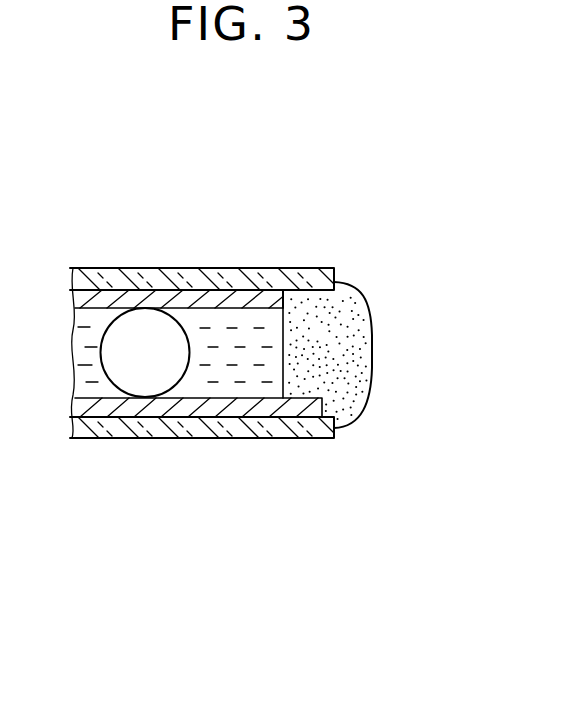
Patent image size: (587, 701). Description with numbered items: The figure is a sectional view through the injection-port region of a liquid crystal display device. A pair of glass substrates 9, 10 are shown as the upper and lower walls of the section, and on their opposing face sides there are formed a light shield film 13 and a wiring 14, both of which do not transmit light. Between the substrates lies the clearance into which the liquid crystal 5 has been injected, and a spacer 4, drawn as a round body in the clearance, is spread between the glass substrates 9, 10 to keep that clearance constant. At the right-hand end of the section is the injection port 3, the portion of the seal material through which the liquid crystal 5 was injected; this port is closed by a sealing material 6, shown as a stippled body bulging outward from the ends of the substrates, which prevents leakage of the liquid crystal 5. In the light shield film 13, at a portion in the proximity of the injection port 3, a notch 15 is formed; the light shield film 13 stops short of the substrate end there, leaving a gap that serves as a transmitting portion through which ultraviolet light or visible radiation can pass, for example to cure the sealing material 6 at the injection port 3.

The injection port 3 is at (275, 360).
The spacer 4 is at (145, 352).
The liquid crystal 5 is at (203, 375).
The sealing material 6 is at (347, 348).
The glass substrate 9 is at (215, 430).
The glass substrate 10 is at (163, 282).
The light shield film 13 is at (240, 303).
The wiring 14 is at (258, 408).
The notch 15 is at (270, 302).